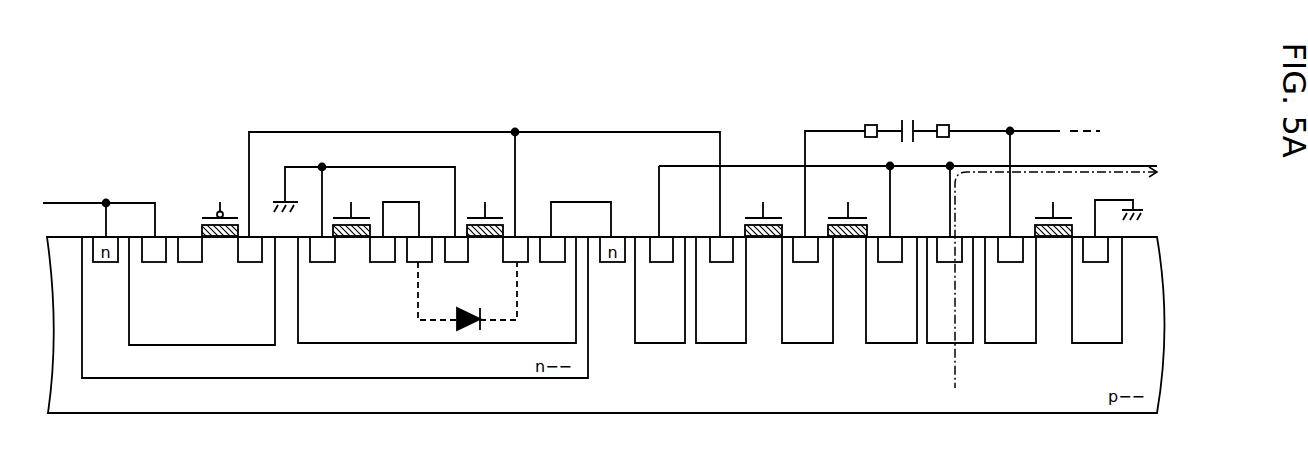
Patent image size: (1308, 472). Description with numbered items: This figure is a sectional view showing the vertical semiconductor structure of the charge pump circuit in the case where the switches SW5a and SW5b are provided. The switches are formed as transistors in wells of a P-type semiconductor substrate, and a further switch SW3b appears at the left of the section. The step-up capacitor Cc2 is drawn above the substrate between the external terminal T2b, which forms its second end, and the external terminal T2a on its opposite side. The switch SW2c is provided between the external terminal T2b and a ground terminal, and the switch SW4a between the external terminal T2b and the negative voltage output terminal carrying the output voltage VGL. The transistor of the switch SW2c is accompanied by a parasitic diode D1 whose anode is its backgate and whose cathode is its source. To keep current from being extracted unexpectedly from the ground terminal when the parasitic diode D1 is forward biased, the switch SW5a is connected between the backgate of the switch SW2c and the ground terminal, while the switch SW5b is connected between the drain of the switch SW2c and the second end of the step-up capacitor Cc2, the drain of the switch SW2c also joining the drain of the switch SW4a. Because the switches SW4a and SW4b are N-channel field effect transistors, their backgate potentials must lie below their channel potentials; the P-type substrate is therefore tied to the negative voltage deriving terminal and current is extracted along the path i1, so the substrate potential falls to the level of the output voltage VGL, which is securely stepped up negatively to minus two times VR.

The voltage VR is at (99, 209).
The output voltage VGL is at (914, 155).
The switch SW3b is at (140, 266).
The switch SW5a is at (309, 278).
The switch SW2c is at (407, 263).
The parasitic diode D1 is at (467, 333).
The switch SW5b is at (635, 358).
The switch SW4a is at (782, 347).
The switch SW4b is at (1122, 358).
The external terminal T2b is at (865, 126).
The step-up capacitor Cc2 is at (907, 119).
The terminal T2a is at (949, 126).
The path i1 is at (1056, 277).